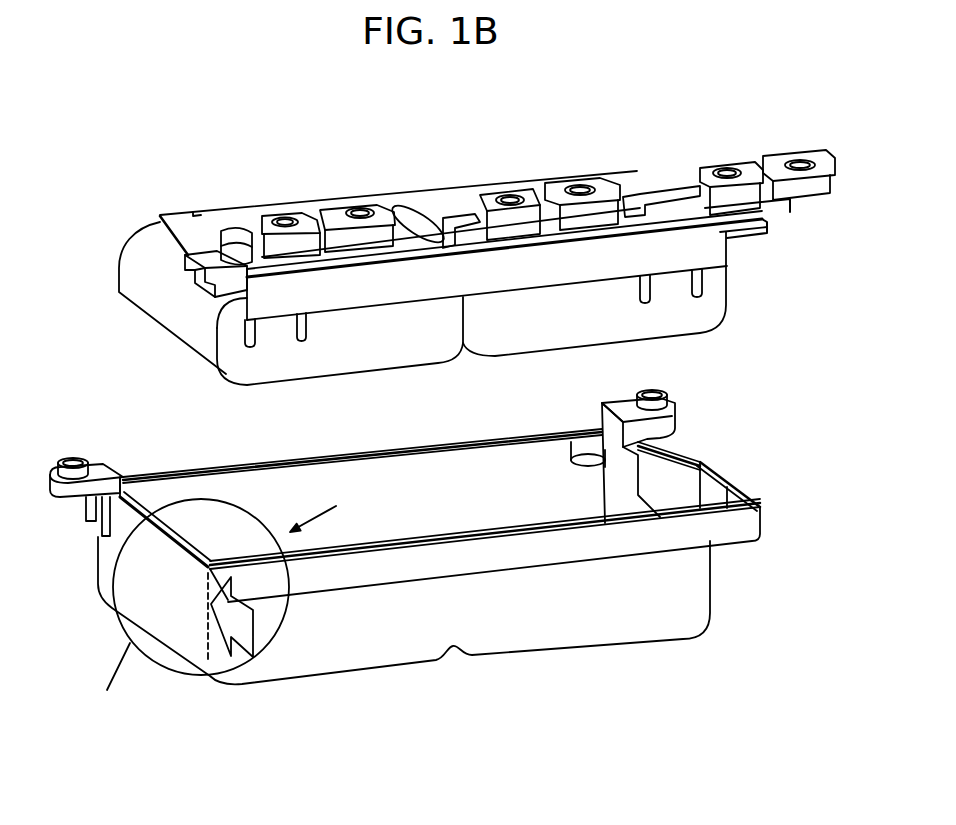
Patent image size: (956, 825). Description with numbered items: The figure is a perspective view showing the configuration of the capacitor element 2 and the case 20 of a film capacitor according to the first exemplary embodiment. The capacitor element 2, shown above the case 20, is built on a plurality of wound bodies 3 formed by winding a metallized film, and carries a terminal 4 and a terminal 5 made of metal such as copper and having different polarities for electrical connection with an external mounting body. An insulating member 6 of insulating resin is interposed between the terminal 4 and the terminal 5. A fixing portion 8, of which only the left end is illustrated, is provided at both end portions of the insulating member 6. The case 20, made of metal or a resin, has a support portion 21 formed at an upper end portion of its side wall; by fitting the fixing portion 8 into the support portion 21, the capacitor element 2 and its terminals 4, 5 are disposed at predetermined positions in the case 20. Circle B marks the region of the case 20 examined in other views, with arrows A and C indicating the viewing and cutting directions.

The capacitor element 2 is at (458, 160).
The wound body 3 is at (153, 299).
The terminal 4 is at (382, 213).
The terminal 5 is at (307, 218).
The insulating member 6 is at (233, 252).
The fixing portion 8 is at (187, 262).
The case 20 is at (390, 438).
The support portion 21 is at (192, 545).